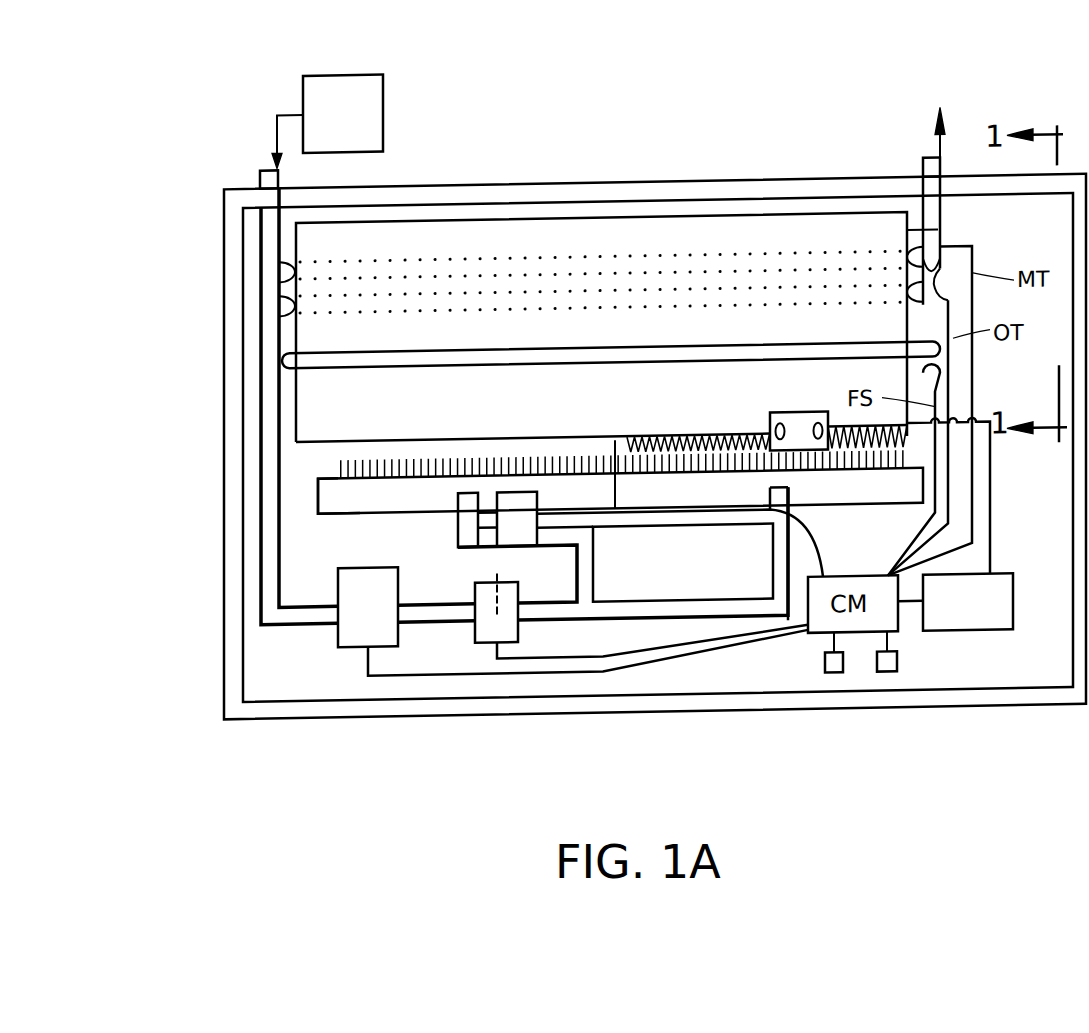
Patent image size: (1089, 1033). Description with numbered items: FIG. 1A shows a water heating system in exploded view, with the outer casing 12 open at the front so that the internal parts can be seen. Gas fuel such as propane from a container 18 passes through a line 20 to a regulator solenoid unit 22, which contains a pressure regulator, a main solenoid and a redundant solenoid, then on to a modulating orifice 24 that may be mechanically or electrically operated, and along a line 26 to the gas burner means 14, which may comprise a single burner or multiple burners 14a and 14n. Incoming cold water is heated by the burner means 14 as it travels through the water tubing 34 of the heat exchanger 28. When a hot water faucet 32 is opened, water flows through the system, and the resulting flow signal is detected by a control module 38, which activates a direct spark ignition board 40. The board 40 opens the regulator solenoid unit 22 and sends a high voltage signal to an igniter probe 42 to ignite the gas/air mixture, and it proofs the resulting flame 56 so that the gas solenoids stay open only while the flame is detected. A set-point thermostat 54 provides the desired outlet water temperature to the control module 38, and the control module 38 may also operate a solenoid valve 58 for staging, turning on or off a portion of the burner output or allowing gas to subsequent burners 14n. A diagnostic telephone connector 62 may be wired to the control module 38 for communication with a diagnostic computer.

The outer casing 12 is at (563, 186).
The gas burner means 14 is at (642, 427).
The burner 14a is at (620, 474).
The subsequent burner 14n is at (357, 503).
The container 18 is at (383, 88).
The line 20 is at (258, 180).
The regulator solenoid unit 22 is at (366, 572).
The modulating orifice 24 is at (487, 586).
The line 26 is at (643, 606).
The heat exchanger 28 is at (303, 237).
The hot water faucet 32 is at (923, 180).
The water tubing 34 is at (278, 353).
The control module 38 is at (862, 586).
The direct spark ignition board 40 is at (993, 642).
The igniter probe 42 is at (770, 422).
The set-point thermostat 54 is at (825, 670).
The flame 56 is at (700, 440).
The solenoid valve 58 is at (510, 550).
The diagnostic telephone connector 62 is at (897, 675).